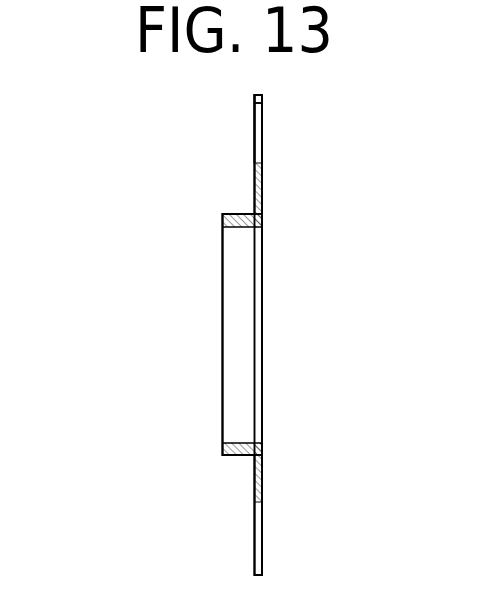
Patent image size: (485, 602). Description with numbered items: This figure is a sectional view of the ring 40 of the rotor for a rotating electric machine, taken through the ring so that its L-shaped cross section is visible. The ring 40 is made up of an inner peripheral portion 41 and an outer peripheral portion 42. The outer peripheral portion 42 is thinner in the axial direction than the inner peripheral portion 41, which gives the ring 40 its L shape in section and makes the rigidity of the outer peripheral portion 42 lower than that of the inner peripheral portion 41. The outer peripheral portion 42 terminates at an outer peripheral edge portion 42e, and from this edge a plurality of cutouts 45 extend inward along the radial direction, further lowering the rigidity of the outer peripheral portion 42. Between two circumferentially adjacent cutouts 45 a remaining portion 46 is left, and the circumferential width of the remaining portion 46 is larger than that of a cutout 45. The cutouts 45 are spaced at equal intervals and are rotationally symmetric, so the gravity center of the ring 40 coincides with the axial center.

The ring 40 is at (84, 108).
The inner peripheral portion 41 is at (222, 216).
The outer peripheral portion 42 is at (254, 122).
The outer peripheral edge portion 42e is at (258, 91).
The cutout 45 is at (262, 153).
The remaining portion 46 is at (256, 133).